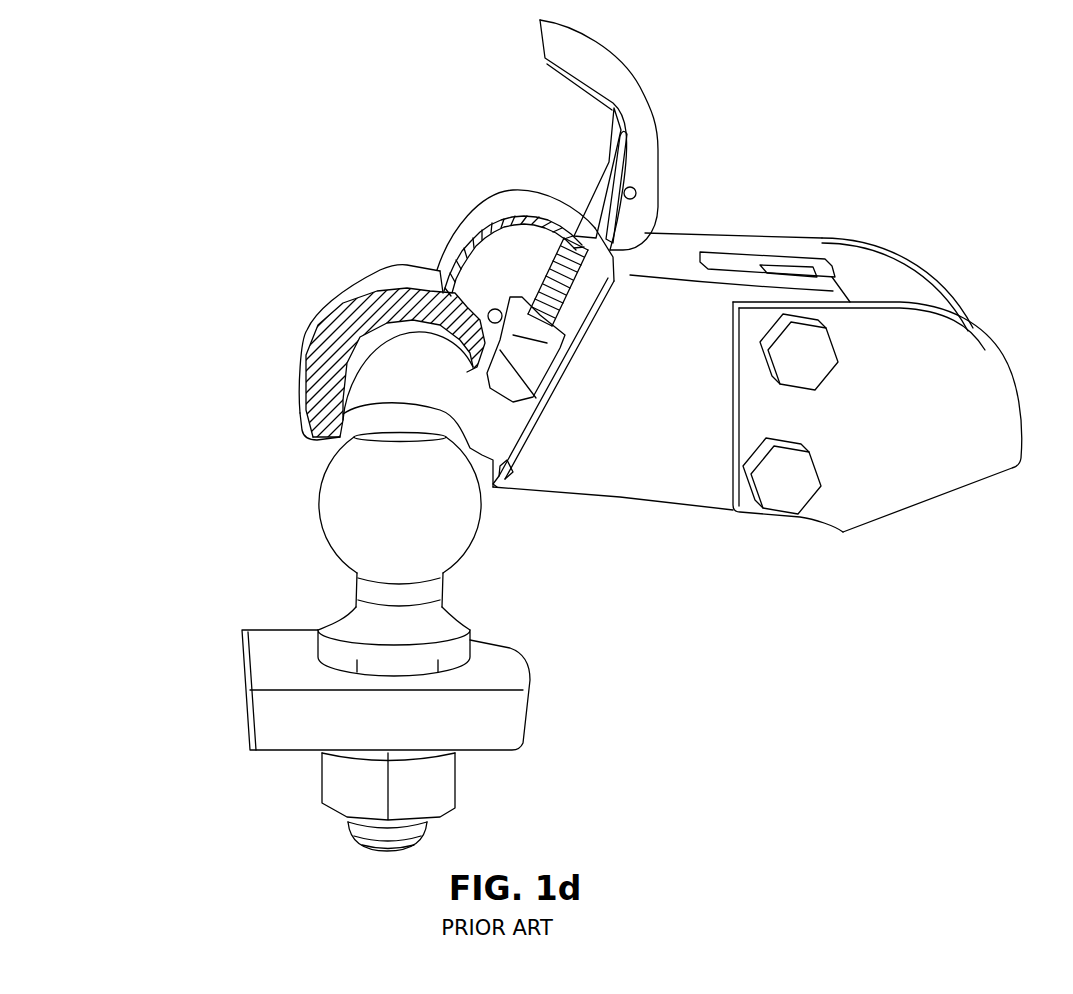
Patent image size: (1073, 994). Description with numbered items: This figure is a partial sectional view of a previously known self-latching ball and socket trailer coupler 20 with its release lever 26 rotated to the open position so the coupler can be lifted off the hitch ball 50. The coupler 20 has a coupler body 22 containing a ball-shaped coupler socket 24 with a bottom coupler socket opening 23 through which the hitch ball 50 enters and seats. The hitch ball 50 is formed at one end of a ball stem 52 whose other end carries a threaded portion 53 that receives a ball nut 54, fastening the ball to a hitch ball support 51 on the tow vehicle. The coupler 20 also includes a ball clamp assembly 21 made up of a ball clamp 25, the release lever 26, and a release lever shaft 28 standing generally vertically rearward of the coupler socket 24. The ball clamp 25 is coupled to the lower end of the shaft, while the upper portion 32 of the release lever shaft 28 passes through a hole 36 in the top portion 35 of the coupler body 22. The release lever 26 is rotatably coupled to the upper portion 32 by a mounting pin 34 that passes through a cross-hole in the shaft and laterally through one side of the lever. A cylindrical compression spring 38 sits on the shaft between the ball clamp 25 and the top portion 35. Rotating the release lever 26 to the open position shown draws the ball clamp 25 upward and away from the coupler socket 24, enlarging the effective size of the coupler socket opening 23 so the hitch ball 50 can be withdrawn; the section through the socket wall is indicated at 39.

The coupler 20 is at (692, 110).
The ball clamp assembly 21 is at (514, 244).
The coupler body 22 is at (682, 263).
The coupler socket opening 23 is at (383, 378).
The coupler socket 24 is at (397, 330).
The ball clamp 25 is at (507, 373).
The release lever 26 is at (603, 67).
The release lever shaft 28 is at (597, 207).
The upper portion of the release lever shaft 32 is at (613, 165).
The mounting pin 34 is at (635, 188).
The top portion of the coupler body 35 is at (500, 224).
The hole 36 is at (583, 223).
The cylindrical compression spring 38 is at (563, 307).
The socket cross-section 39 is at (400, 350).
The hitch ball 50 is at (358, 498).
The hitch ball support 51 is at (280, 667).
The ball stem 52 is at (377, 593).
The threaded portion 53 is at (347, 823).
The ball nut 54 is at (335, 773).